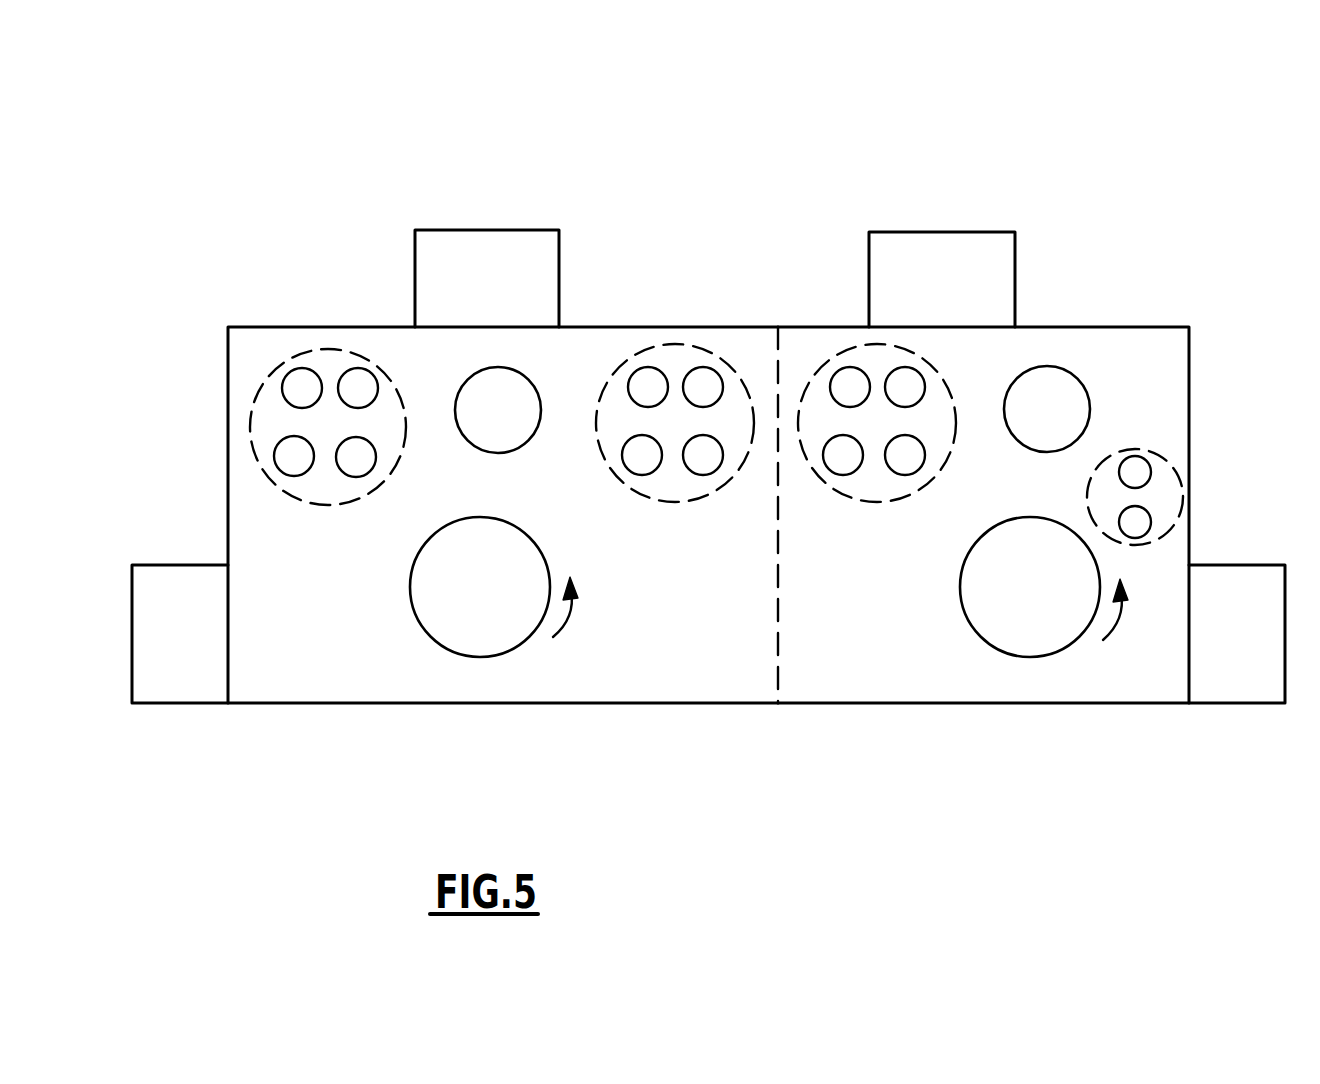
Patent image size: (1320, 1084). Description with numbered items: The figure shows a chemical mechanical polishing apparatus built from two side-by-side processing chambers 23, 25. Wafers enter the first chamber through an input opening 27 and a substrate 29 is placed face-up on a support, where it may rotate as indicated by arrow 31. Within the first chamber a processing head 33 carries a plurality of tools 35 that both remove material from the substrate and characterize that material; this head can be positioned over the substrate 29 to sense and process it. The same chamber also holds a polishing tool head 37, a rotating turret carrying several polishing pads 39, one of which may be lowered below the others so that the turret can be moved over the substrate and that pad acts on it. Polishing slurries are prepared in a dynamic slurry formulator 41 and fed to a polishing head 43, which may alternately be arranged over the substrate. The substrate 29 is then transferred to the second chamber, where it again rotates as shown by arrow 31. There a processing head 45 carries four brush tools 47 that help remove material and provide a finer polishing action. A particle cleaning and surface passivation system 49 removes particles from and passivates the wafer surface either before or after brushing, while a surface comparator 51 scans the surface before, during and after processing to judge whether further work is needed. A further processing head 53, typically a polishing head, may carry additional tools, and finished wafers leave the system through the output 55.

The processing chamber 23 is at (375, 692).
The processing chamber 25 is at (877, 692).
The input opening 27 is at (187, 563).
The substrate 29 is at (437, 627).
The arrow 31 is at (567, 612).
The processing head 33 is at (675, 411).
The tools 35 is at (620, 462).
The polishing tool head 37 is at (328, 408).
The polishing pads 39 is at (275, 462).
The dynamic slurry formulator 41 is at (491, 229).
The polishing head 43 is at (492, 452).
The processing head 45 is at (868, 430).
The brush tools 47 is at (820, 462).
The particle cleaning and surface passivation system 49 is at (1015, 260).
The surface comparator 51 is at (1180, 465).
The processing head 53 is at (1072, 369).
The output 55 is at (1223, 706).